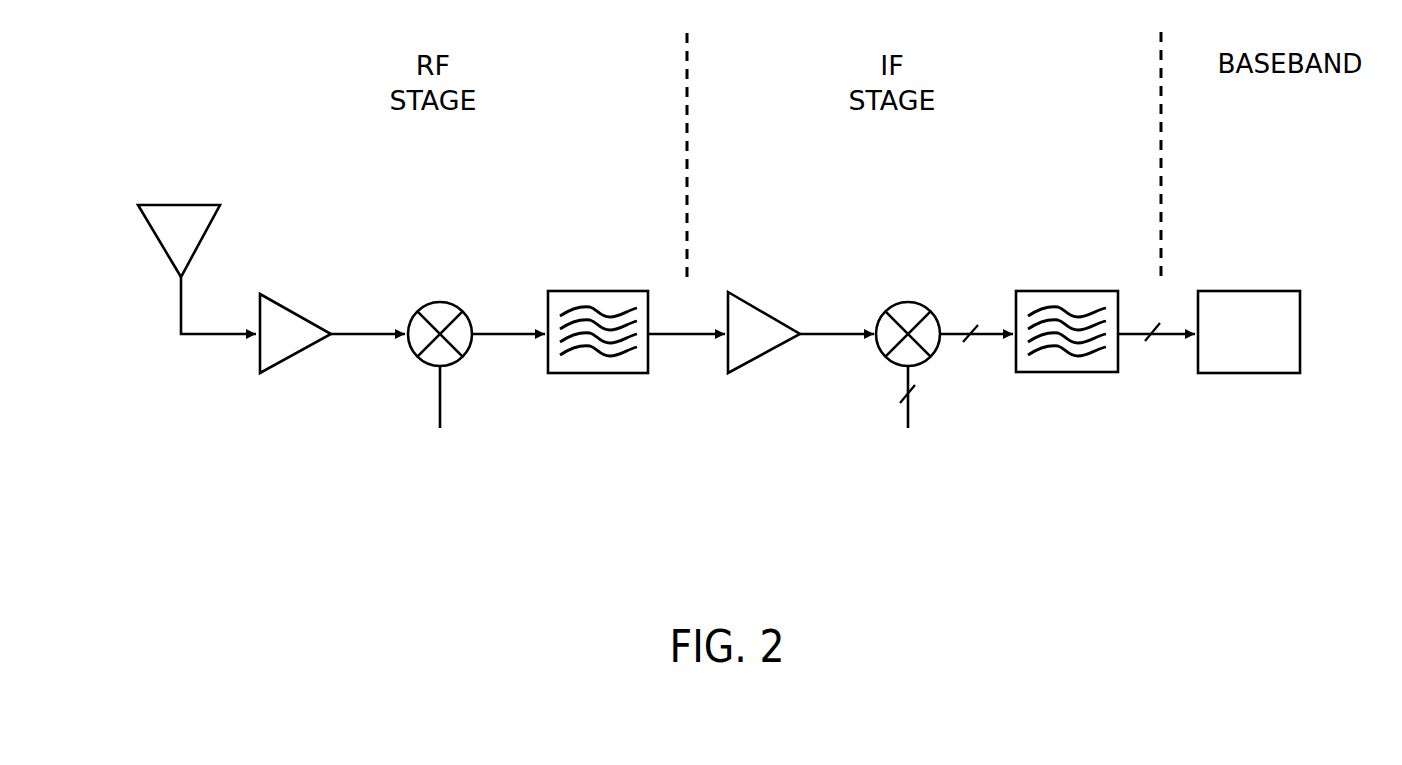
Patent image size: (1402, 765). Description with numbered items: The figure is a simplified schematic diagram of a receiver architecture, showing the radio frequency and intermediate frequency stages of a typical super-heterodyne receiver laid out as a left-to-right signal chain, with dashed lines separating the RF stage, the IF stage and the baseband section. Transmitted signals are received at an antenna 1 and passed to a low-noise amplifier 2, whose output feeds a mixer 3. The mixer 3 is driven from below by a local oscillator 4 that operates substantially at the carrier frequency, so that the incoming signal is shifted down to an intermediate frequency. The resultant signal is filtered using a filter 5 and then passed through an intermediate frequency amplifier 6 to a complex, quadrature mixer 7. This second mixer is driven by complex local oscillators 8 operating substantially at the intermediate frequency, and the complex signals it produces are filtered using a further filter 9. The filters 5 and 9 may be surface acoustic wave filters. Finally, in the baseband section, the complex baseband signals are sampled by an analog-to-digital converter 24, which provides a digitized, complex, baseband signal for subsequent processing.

The antenna 1 is at (200, 242).
The low-noise amplifier 2 is at (297, 312).
The mixer 3 is at (448, 307).
The local oscillator 4 is at (442, 498).
The filter 5 is at (608, 291).
The intermediate frequency amplifier 6 is at (765, 302).
The complex quadrature mixer 7 is at (917, 298).
The complex local oscillators 8 is at (910, 498).
The filter 9 is at (1078, 291).
The analog-to-digital converter 24 is at (1263, 291).